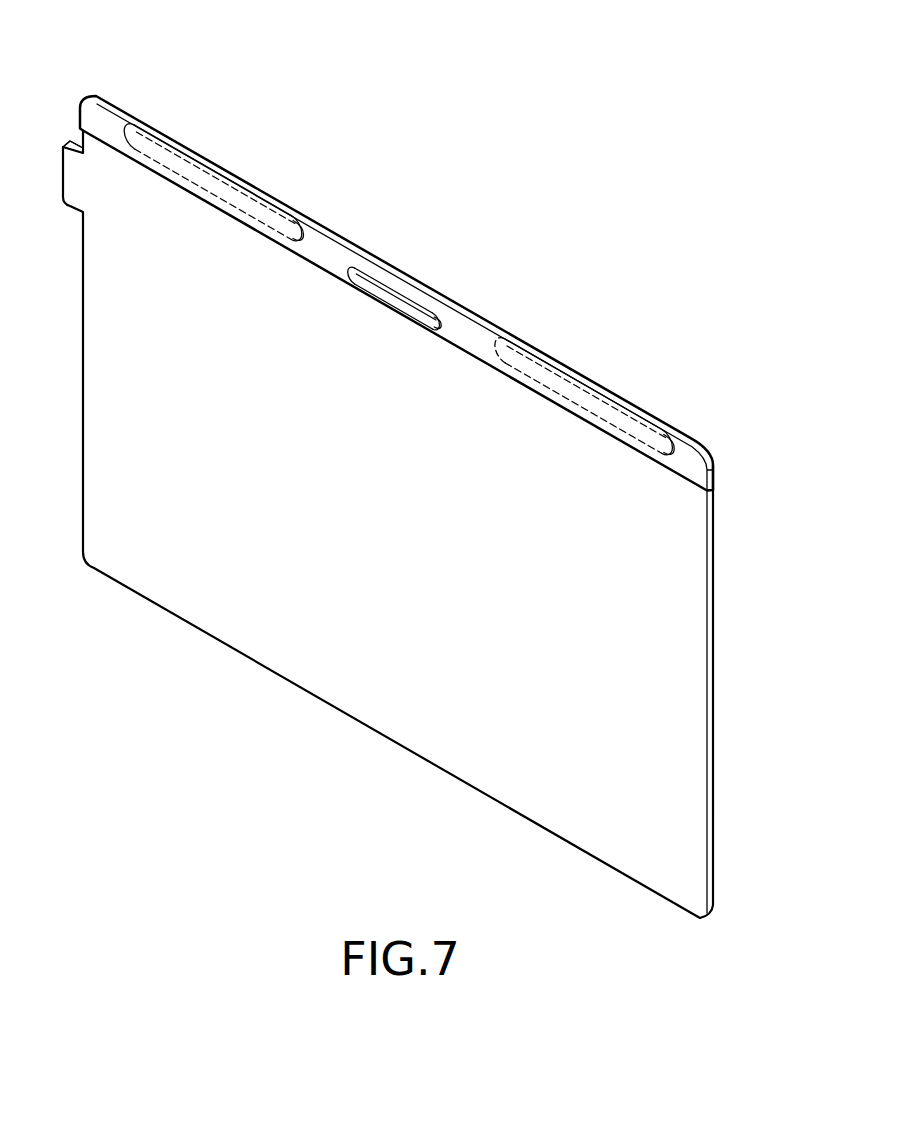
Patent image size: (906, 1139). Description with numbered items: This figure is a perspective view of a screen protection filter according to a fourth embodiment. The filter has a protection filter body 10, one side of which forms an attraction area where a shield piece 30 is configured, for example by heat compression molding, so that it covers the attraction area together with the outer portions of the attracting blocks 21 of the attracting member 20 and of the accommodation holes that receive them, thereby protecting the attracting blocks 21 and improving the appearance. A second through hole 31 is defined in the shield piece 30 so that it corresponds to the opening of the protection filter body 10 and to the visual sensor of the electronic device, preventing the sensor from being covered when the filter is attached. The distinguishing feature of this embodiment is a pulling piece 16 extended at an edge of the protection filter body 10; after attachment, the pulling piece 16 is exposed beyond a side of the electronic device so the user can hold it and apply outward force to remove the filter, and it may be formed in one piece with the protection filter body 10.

The protection filter body 10 is at (753, 174).
The pulling piece 16 is at (72, 165).
The attracting member 20 is at (551, 283).
The attracting block 21 is at (271, 222).
The shield piece 30 is at (695, 463).
The second through hole 31 is at (373, 287).